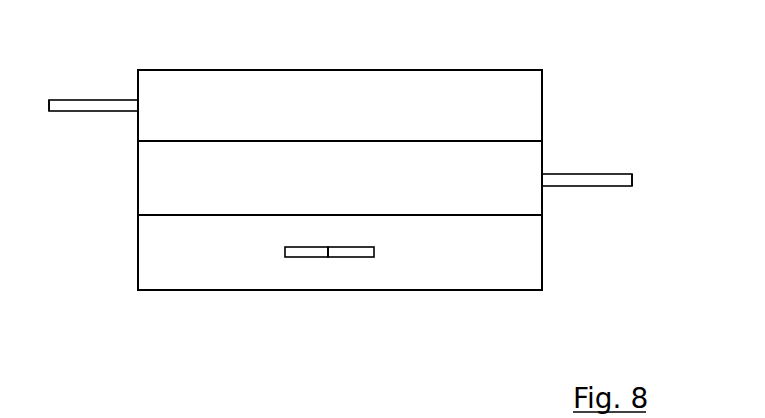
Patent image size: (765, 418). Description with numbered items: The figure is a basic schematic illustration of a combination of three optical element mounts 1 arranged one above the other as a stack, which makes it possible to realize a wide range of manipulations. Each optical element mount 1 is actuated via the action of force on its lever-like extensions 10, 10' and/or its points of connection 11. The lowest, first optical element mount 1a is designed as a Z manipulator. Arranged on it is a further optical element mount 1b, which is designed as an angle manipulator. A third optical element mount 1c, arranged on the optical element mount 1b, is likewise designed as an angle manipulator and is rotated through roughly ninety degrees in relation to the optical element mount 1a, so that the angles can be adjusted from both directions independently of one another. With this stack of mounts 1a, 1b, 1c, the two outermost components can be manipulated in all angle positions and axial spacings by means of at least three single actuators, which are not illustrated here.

The optical element mount 1 is at (65, 417).
The first optical element mount 1a is at (521, 260).
The further optical element mount 1b is at (521, 196).
The third optical element mount 1c is at (521, 132).
The lever-like extension 10 is at (340, 202).
The lever-like extension 10' is at (386, 323).
The point of connection 11 is at (49, 110).